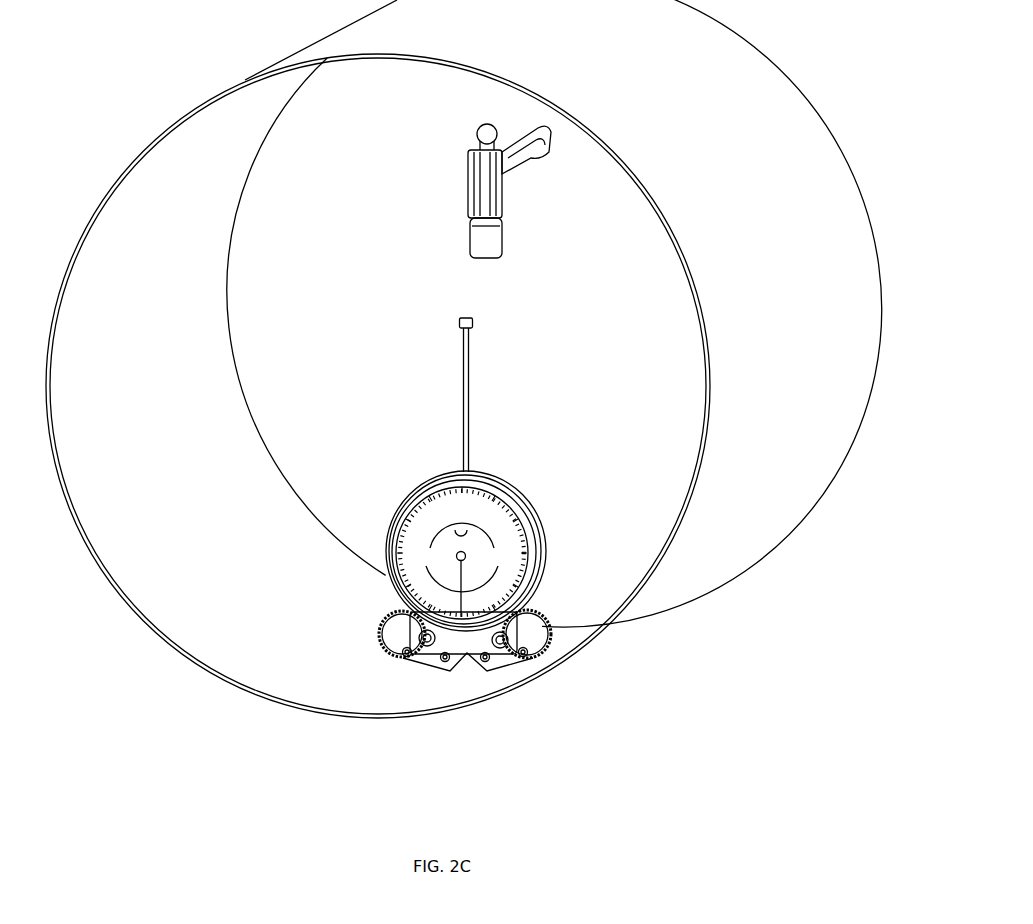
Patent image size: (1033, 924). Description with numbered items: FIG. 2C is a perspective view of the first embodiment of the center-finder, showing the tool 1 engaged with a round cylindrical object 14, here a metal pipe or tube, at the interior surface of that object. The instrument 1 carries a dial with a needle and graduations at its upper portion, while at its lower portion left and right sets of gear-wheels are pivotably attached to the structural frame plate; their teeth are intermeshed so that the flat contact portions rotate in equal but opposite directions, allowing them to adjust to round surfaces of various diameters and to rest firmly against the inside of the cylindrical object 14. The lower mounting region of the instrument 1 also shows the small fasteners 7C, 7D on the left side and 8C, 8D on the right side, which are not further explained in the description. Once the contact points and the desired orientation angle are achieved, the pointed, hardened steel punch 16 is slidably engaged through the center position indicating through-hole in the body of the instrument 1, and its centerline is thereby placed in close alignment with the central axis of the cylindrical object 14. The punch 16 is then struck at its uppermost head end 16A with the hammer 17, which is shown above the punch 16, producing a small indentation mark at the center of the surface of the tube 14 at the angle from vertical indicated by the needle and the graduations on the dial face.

The tool 1 is at (537, 479).
The cylindrical object 14 is at (272, 440).
The pointed, hardened steel punch 16 is at (478, 389).
The uppermost head end 16A is at (483, 316).
The hammer 17 is at (455, 180).
The left bracket fastener 7C is at (401, 676).
The left bracket fastener 7D is at (449, 686).
The right bracket fastener 8C is at (535, 679).
The right bracket fastener 8D is at (484, 686).